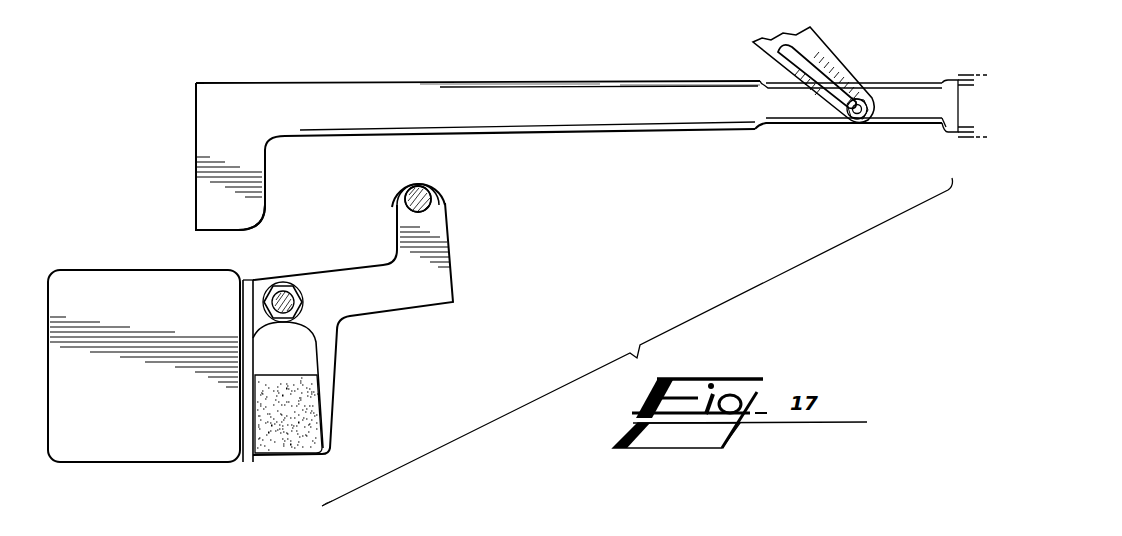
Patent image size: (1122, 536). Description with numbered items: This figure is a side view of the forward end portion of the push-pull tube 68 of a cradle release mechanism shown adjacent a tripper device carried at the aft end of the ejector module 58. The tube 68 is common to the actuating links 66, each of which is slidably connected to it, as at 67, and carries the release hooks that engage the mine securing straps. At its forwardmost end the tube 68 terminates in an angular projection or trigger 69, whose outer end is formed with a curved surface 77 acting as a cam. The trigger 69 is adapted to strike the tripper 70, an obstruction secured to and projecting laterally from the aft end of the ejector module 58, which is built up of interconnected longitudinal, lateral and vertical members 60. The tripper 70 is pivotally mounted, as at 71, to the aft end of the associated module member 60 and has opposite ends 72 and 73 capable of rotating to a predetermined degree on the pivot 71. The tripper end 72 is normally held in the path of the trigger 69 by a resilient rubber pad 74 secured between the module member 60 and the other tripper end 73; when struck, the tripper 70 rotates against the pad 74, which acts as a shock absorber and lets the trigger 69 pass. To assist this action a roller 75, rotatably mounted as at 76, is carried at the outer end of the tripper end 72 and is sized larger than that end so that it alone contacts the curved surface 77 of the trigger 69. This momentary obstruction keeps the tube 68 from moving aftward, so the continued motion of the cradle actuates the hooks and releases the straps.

The ejector module 58 is at (138, 270).
The module member 60 is at (151, 407).
The actuating link 66 is at (812, 45).
The slidable connection 67 is at (847, 123).
The push-pull tube 68 is at (628, 100).
The trigger 69 is at (207, 195).
The tripper 70 is at (437, 225).
The pivot 71 is at (292, 292).
The tripper end 72 is at (432, 200).
The other tripper end 73 is at (337, 365).
The rubber pad 74 is at (320, 415).
The roller 75 is at (438, 185).
The rotatable mounting 76 is at (418, 200).
The curved surface 77 is at (262, 220).